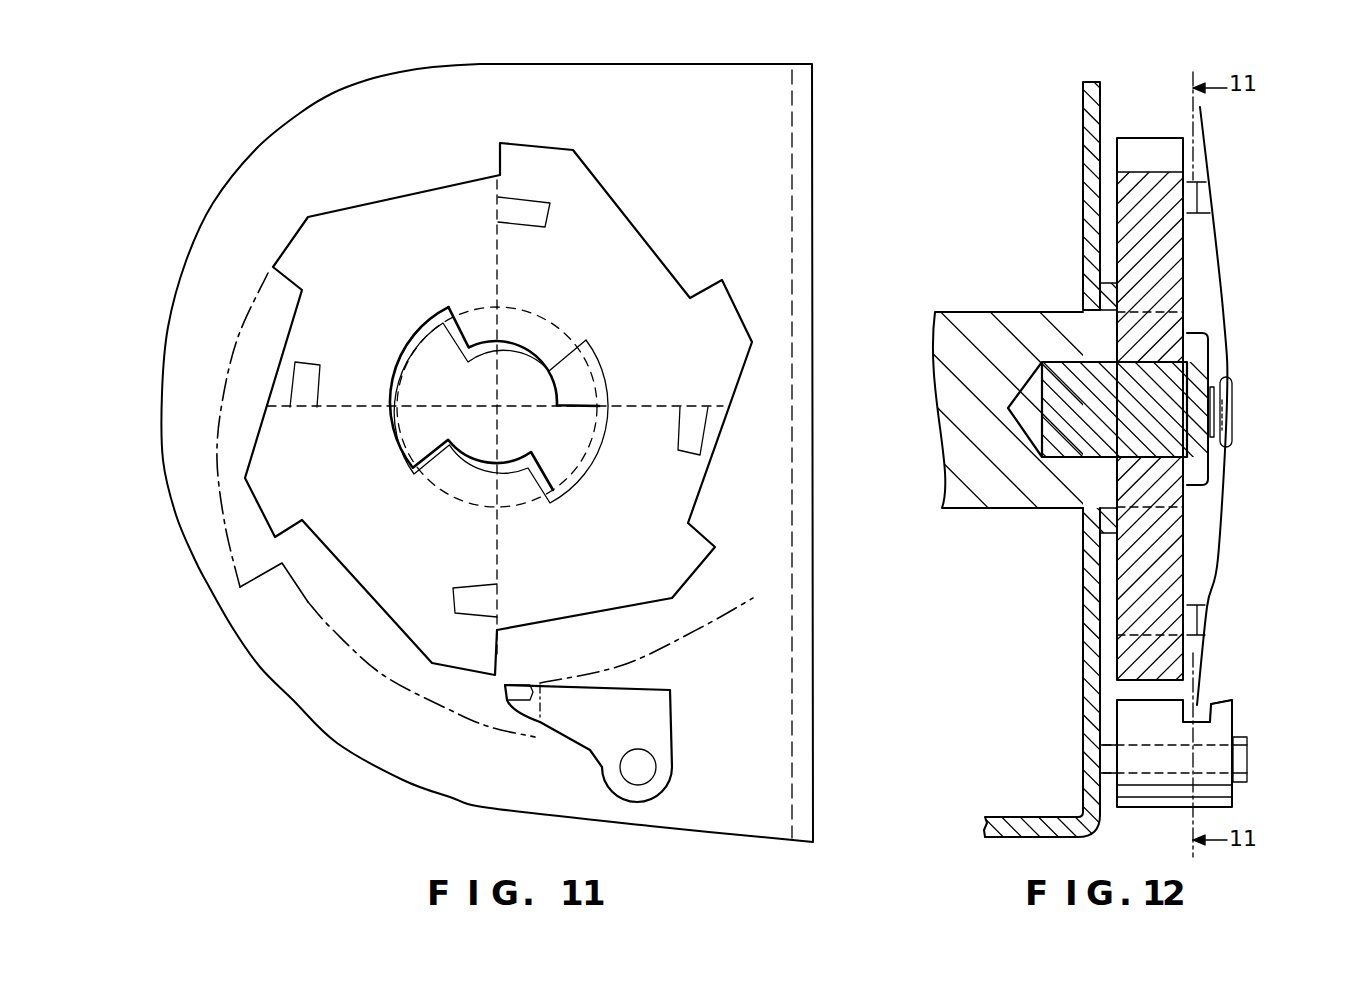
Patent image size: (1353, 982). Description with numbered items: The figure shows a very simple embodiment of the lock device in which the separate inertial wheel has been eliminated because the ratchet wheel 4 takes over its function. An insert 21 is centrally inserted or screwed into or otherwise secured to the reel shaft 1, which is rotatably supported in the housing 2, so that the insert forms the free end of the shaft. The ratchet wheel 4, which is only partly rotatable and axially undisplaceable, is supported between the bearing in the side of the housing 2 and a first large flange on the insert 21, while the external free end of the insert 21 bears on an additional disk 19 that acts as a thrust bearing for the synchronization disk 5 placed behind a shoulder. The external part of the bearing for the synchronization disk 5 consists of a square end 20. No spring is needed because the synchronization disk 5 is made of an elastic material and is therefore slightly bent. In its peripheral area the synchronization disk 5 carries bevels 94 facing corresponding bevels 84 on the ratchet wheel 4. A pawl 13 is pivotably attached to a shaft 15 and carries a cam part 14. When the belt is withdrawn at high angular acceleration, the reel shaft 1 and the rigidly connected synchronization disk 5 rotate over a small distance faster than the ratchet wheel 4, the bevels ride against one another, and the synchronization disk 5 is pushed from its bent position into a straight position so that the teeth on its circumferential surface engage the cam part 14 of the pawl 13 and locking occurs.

In FIG. 12, the reel shaft 1 is at (1013, 313).
In FIG. 11, the retractor housing 2 is at (252, 167).
In FIG. 12, the retractor housing 2 is at (1012, 820).
In FIG. 11, the ratchet wheel 4 is at (613, 232).
In FIG. 12, the ratchet wheel 4 is at (1138, 145).
In FIG. 11, the synchronization disk 5 is at (347, 633).
In FIG. 12, the synchronization disk 5 is at (1223, 310).
In FIG. 11, the pawl 13 is at (660, 705).
In FIG. 12, the pawl 13 is at (1225, 797).
In FIG. 11, the cam part 14 is at (505, 690).
In FIG. 12, the cam part 14 is at (1227, 703).
In FIG. 12, the shaft 15 is at (1105, 760).
In FIG. 12, the additional disk 19 is at (1232, 433).
In FIG. 12, the square end 20 is at (1214, 397).
In FIG. 11, the insert 21 is at (570, 442).
In FIG. 12, the insert 21 is at (1107, 443).
In FIG. 11, the bevels 84 is at (533, 217).
In FIG. 12, the bevels 84 is at (1192, 185).
In FIG. 12, the bevels 94 is at (1202, 200).